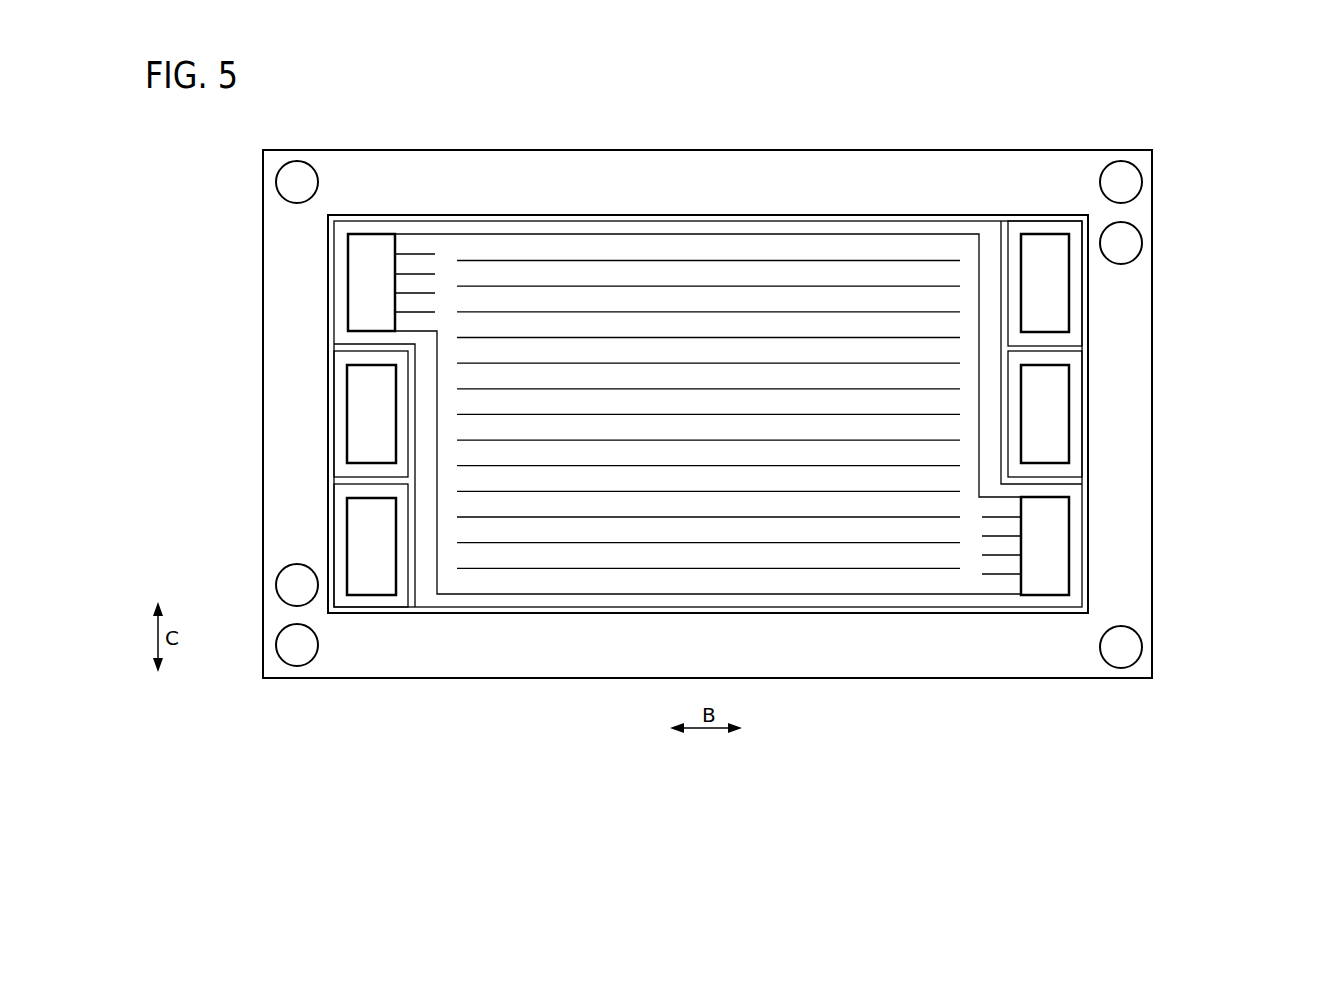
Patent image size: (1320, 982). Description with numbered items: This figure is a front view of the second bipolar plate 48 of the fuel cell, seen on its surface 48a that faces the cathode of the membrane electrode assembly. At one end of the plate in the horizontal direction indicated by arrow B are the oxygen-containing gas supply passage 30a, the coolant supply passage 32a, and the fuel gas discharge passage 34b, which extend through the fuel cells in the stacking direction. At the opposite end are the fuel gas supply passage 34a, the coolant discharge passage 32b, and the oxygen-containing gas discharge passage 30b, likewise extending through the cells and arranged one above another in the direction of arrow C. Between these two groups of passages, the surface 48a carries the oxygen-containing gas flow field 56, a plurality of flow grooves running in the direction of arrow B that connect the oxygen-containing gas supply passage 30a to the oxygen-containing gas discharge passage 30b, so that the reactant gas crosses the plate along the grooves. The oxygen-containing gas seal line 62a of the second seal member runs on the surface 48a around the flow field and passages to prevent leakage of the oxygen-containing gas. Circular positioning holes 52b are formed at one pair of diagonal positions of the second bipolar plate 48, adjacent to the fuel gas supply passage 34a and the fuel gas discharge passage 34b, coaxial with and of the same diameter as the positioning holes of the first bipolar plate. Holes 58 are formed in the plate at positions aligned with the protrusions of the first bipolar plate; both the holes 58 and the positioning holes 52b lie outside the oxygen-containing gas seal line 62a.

The second bipolar plate 48 is at (371, 111).
The surface of the second bipolar plate 48a is at (910, 163).
The holes 58 is at (283, 181).
The positioning holes 52b is at (1132, 181).
The oxygen-containing gas seal line 62a is at (583, 215).
The oxygen-containing gas flow field 56 is at (745, 298).
The oxygen-containing gas supply passage 30a is at (358, 272).
The coolant supply passage 32a is at (358, 427).
The fuel gas discharge passage 34b is at (358, 520).
The fuel gas supply passage 34a is at (1056, 309).
The coolant discharge passage 32b is at (1056, 400).
The oxygen-containing gas discharge passage 30b is at (1056, 556).